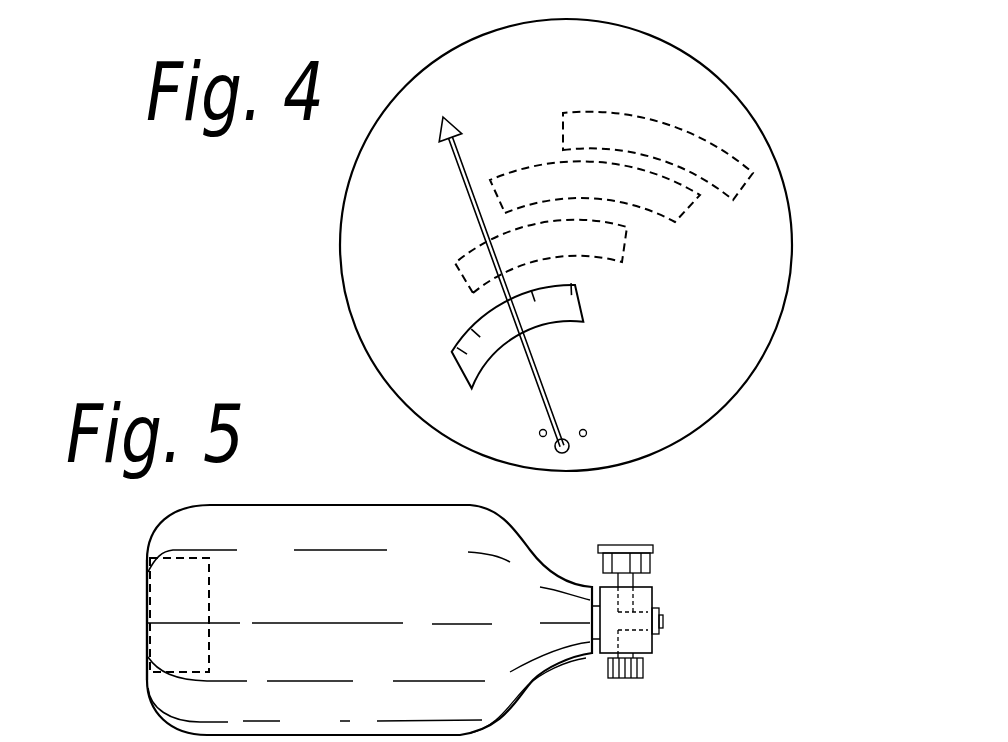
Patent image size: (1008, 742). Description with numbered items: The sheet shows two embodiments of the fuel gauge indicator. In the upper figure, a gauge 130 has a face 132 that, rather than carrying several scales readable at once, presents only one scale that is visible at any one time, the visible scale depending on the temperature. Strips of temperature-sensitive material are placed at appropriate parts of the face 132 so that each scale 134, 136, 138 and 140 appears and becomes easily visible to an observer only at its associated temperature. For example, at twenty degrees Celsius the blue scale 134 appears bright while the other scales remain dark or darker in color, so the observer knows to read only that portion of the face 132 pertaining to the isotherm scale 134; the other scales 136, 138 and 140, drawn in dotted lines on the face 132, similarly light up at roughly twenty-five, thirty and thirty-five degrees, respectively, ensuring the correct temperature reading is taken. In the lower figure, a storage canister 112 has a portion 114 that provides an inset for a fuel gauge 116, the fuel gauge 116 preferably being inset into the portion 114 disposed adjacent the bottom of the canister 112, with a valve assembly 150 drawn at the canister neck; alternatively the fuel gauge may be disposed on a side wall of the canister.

In FIG. 5, the storage canister 112 is at (340, 506).
In FIG. 5, the portion 114 is at (165, 556).
In FIG. 5, the fuel gauge 116 is at (147, 623).
In FIG. 4, the gauge 130 is at (752, 63).
In FIG. 4, the face 132 is at (768, 282).
In FIG. 4, the scale 134 is at (462, 345).
In FIG. 4, the scale 136 is at (456, 262).
In FIG. 4, the scale 138 is at (535, 163).
In FIG. 4, the scale 140 is at (602, 110).
In FIG. 5, the valve 150 is at (627, 643).